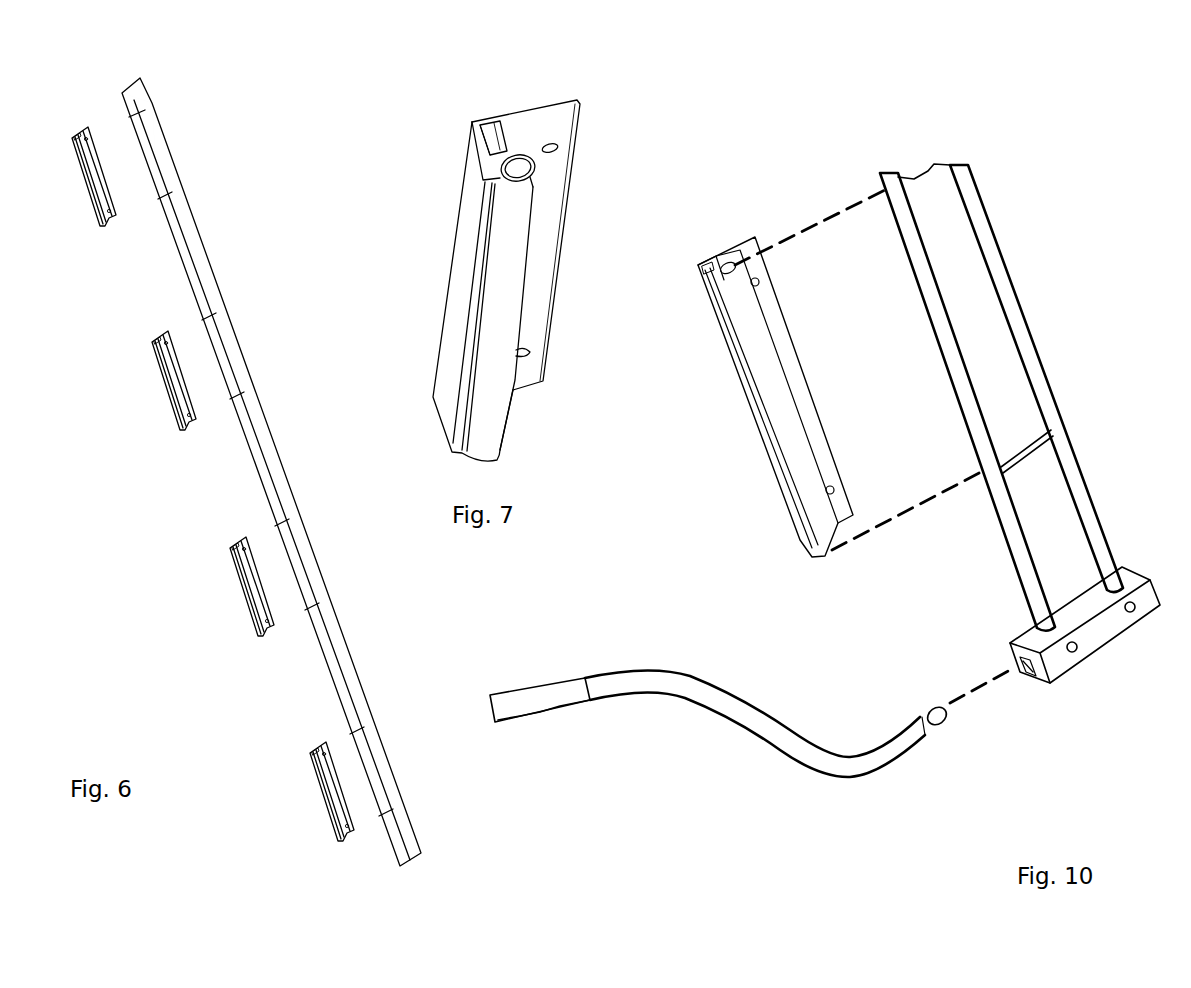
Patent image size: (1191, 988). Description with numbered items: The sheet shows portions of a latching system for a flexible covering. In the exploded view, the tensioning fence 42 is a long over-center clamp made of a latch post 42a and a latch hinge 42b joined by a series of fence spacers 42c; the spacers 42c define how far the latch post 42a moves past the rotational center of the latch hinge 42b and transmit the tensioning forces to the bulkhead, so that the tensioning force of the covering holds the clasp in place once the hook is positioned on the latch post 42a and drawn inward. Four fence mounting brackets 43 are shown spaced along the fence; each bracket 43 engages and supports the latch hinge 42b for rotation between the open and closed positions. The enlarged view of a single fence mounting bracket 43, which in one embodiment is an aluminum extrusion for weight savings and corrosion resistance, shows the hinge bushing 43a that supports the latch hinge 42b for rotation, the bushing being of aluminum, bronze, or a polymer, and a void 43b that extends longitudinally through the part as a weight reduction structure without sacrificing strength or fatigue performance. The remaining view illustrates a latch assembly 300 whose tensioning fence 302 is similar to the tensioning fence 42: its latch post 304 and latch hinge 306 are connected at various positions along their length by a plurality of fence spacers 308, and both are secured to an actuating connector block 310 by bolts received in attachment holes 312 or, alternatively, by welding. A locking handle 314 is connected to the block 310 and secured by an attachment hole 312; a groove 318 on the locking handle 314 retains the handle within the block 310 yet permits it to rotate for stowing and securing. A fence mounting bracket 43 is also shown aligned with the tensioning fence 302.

In FIG. 6, the tensioning fence 42 is at (300, 240).
In FIG. 6, the latch post 42a is at (253, 374).
In FIG. 6, the latch hinge 42b is at (257, 455).
In FIG. 6, the fence spacers 42c is at (137, 93).
In FIG. 6, the fence mounting bracket 43 is at (95, 207).
In FIG. 7, the fence mounting bracket 43 is at (462, 278).
In FIG. 10, the fence mounting bracket 43 is at (745, 398).
In FIG. 7, the hinge bushing 43a is at (532, 166).
In FIG. 7, the void 43b is at (493, 133).
In FIG. 10, the latch assembly 300 is at (1090, 283).
In FIG. 10, the tensioning fence 302 is at (1031, 450).
In FIG. 10, the latch post 304 is at (987, 221).
In FIG. 10, the latch hinge 306 is at (962, 387).
In FIG. 10, the fence spacers 308 is at (1060, 537).
In FIG. 10, the actuating connector block 310 is at (1140, 578).
In FIG. 10, the attachment holes 312 is at (1137, 608).
In FIG. 10, the locking handle 314 is at (820, 740).
In FIG. 10, the groove 318 is at (920, 715).